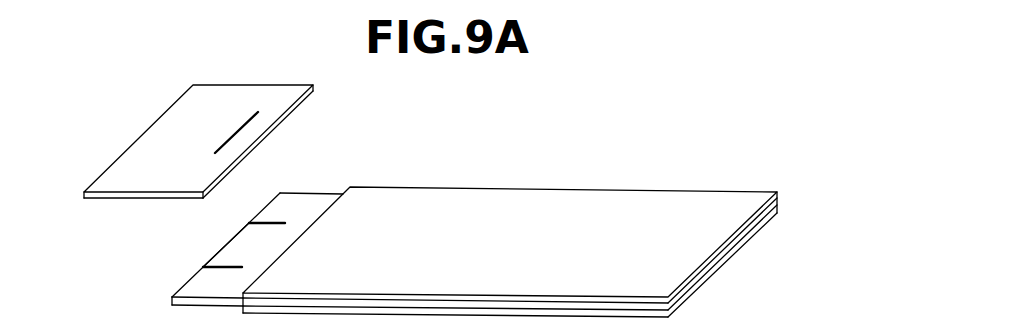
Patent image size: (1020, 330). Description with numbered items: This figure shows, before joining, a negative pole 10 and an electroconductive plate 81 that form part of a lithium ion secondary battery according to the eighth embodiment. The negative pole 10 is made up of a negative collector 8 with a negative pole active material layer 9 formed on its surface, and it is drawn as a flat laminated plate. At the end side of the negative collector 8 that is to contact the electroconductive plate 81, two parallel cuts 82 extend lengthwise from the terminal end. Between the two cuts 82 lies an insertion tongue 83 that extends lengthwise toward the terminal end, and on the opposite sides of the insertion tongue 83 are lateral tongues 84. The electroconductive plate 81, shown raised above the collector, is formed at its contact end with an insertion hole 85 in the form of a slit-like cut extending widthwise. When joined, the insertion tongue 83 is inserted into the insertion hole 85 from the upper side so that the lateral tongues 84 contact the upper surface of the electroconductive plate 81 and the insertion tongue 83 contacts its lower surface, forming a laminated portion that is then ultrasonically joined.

The negative collector 8 is at (320, 204).
The negative pole active material layer 9 is at (655, 208).
The negative pole 10 is at (536, 213).
The electroconductive plate 81 is at (167, 147).
The cuts 82 is at (232, 265).
The insertion tongue 83 is at (226, 258).
The lateral tongues 84 is at (295, 206).
The insertion hole 85 is at (240, 124).